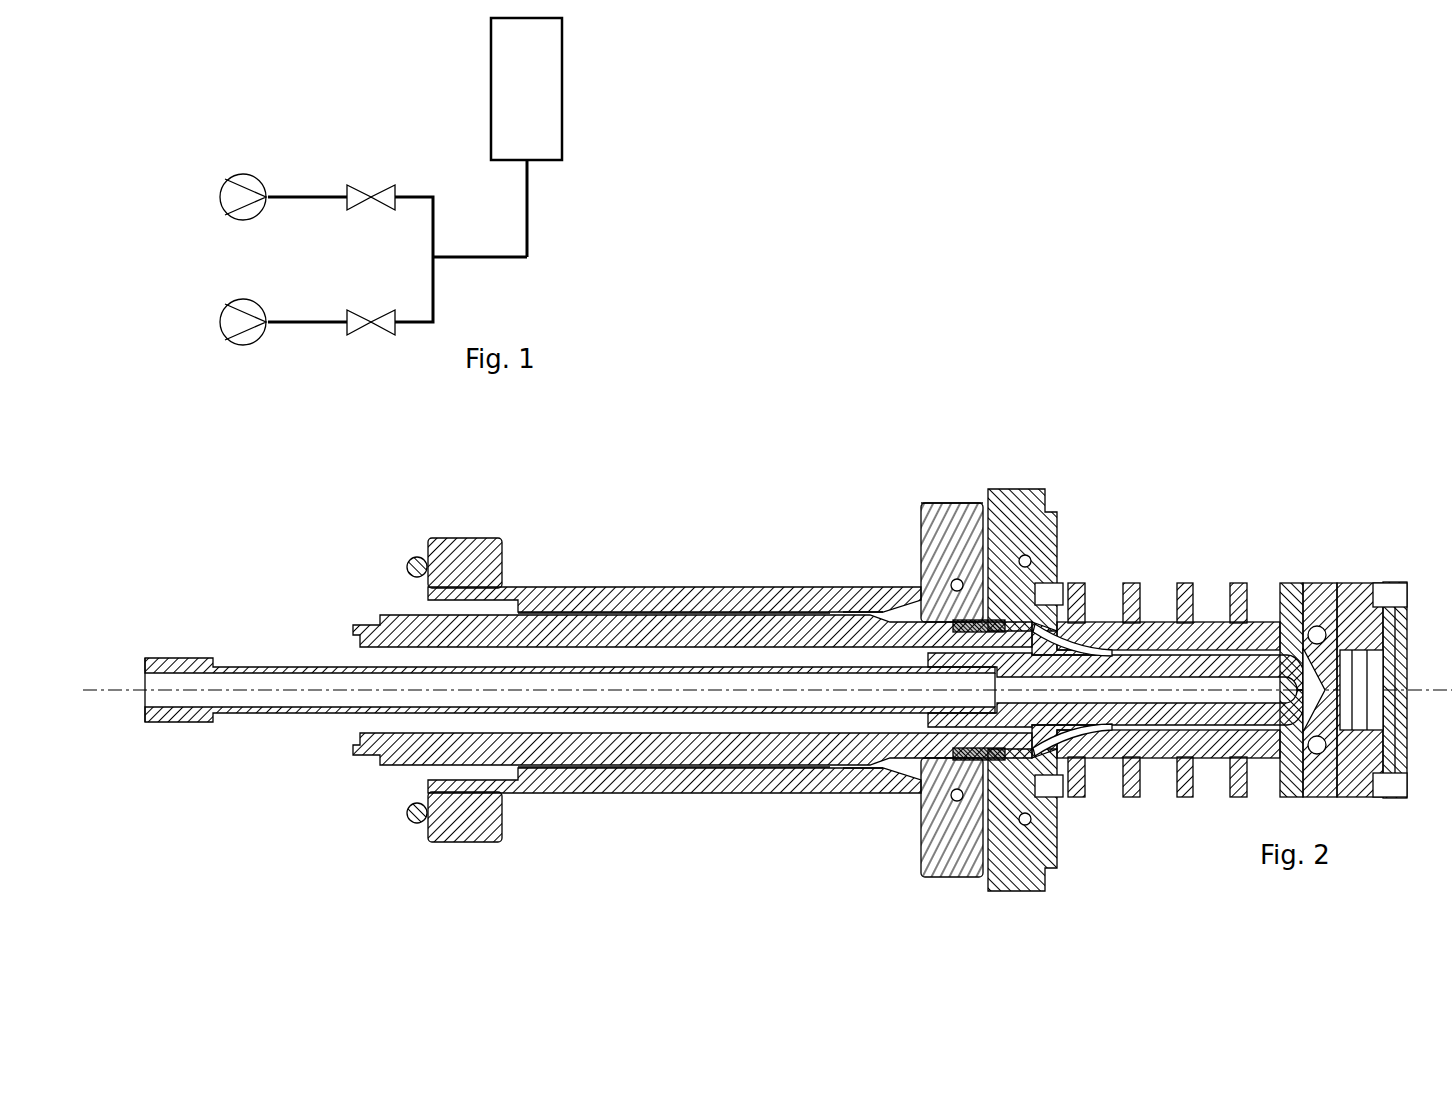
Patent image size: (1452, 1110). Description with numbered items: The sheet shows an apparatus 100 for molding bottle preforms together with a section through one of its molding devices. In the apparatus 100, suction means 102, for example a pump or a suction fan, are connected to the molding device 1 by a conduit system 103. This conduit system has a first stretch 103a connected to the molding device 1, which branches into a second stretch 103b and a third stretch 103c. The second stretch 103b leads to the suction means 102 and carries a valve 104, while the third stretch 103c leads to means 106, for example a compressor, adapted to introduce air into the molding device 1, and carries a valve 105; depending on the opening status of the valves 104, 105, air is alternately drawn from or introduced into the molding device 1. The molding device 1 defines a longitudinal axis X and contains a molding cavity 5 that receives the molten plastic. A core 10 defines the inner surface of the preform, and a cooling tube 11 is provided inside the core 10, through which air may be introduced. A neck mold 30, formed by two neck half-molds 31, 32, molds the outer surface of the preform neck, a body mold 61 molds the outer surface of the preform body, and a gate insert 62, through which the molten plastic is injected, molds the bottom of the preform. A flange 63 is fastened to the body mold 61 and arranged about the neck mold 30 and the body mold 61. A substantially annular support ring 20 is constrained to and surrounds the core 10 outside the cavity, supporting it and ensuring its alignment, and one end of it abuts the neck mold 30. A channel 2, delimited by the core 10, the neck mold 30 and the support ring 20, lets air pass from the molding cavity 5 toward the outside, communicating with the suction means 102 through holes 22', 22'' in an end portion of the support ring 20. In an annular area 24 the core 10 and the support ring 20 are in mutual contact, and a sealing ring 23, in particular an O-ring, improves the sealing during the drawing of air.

In FIG. 1, the apparatus 100 is at (692, 72).
In FIG. 1, the molding device 1 is at (548, 155).
In FIG. 2, the molding device 1 is at (1148, 380).
In FIG. 1, the conduit system 103 is at (532, 199).
In FIG. 1, the first stretch 103a is at (520, 258).
In FIG. 1, the second stretch 103b is at (310, 323).
In FIG. 1, the third stretch 103c is at (317, 195).
In FIG. 1, the valve 104 is at (390, 333).
In FIG. 1, the valve 105 is at (392, 187).
In FIG. 1, the suction means 102 is at (227, 335).
In FIG. 1, the means for introducing air 106 is at (238, 178).
In FIG. 2, the axis X is at (135, 690).
In FIG. 2, the tube 11 is at (300, 662).
In FIG. 2, the core 10 is at (722, 612).
In FIG. 2, the support ring 20 is at (593, 585).
In FIG. 2, the hole 22' is at (463, 537).
In FIG. 2, the hole 22'' is at (454, 840).
In FIG. 2, the sealing ring 23 is at (408, 560).
In FIG. 2, the channel 2 is at (658, 612).
In FIG. 2, the area 24 is at (843, 614).
In FIG. 2, the neck mold 30 is at (932, 500).
In FIG. 2, the neck half-mold 31 is at (957, 515).
In FIG. 2, the neck half-mold 32 is at (940, 830).
In FIG. 2, the flange 63 is at (1015, 490).
In FIG. 2, the body mold 61 is at (1200, 613).
In FIG. 2, the molding cavity 5 is at (1140, 655).
In FIG. 2, the gate insert 62 is at (1350, 580).